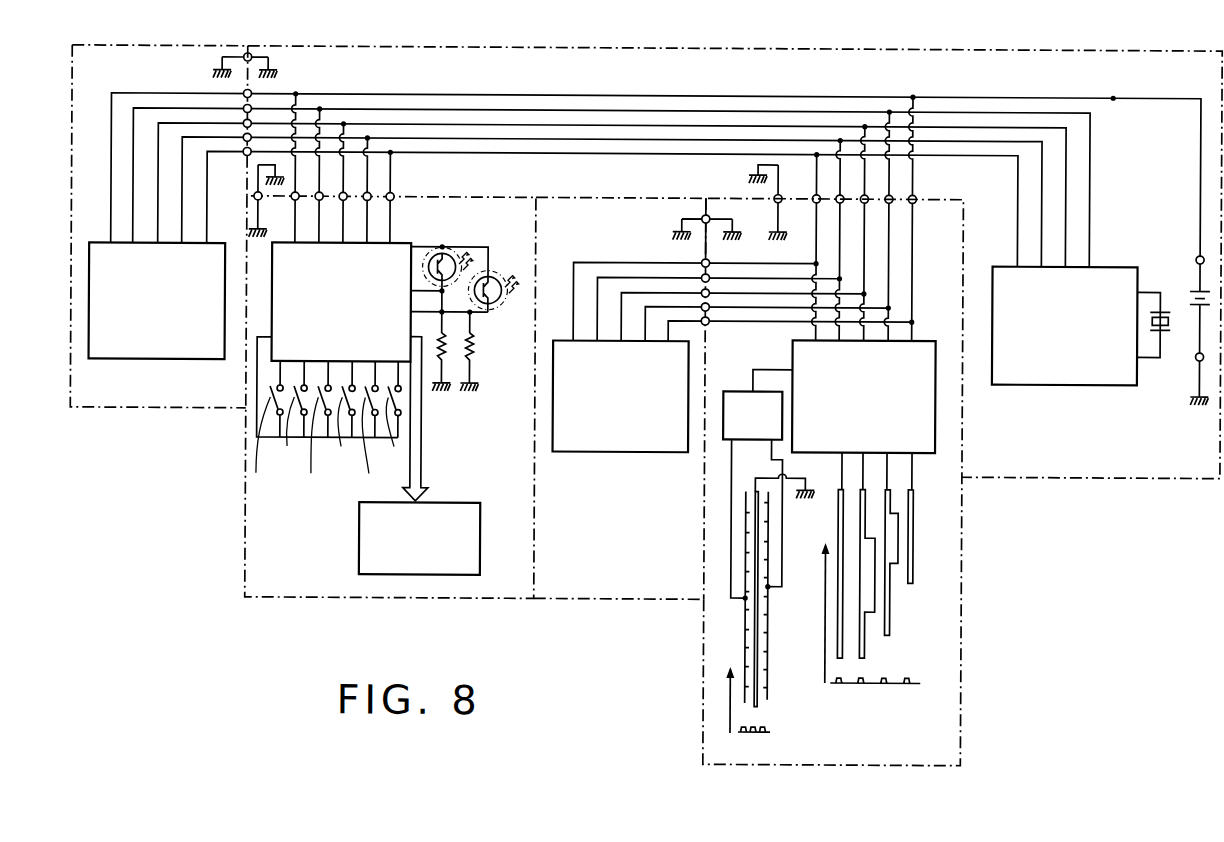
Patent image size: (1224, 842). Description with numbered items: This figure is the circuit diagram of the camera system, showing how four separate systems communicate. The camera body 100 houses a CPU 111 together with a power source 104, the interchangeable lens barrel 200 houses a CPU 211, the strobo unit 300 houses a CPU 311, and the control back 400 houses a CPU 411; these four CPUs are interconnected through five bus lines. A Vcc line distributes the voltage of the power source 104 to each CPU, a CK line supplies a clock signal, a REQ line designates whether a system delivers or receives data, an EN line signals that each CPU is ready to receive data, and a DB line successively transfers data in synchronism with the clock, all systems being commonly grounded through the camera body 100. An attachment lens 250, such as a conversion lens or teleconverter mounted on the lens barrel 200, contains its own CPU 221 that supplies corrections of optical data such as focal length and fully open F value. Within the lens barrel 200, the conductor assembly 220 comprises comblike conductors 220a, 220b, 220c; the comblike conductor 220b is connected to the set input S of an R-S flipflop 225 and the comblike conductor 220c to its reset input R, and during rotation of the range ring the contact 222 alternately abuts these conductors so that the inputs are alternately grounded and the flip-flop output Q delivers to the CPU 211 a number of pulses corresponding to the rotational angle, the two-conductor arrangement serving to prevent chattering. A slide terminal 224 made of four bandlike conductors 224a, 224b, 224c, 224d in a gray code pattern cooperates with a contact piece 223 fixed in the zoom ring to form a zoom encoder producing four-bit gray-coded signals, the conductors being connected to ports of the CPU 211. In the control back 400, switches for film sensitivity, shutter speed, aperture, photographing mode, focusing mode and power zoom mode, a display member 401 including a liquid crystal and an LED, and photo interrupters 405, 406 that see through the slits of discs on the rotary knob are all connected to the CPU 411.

The camera body 100 is at (1104, 478).
The power source 104 is at (1191, 286).
The CPU of camera body 111 is at (1015, 368).
The interchangeable lens barrel 200 is at (969, 649).
The CPU of lens barrel 211 is at (795, 352).
The conductor assembly 220 is at (793, 613).
The comblike conductor 220a is at (750, 665).
The comblike conductor 220b is at (760, 637).
The comblike conductor 220c is at (772, 597).
The CPU of attachment lens 221 is at (616, 447).
The contact 222 is at (773, 730).
The contact piece 223 is at (898, 683).
The slide terminal 224 is at (927, 555).
The bandlike conductor 224a is at (841, 537).
The bandlike conductor 224b is at (870, 636).
The bandlike conductor 224c is at (891, 608).
The bandlike conductor 224d is at (915, 571).
The R-S flipflop 225 is at (743, 391).
The attachment lens 250 is at (590, 601).
The strobo unit 300 is at (146, 413).
The CPU of strobo unit 311 is at (175, 358).
The control back 400 is at (398, 601).
The display member 401 is at (456, 500).
The photo interrupter 405 is at (457, 248).
The photo interrupter 406 is at (501, 274).
The CPU of control back 411 is at (404, 245).